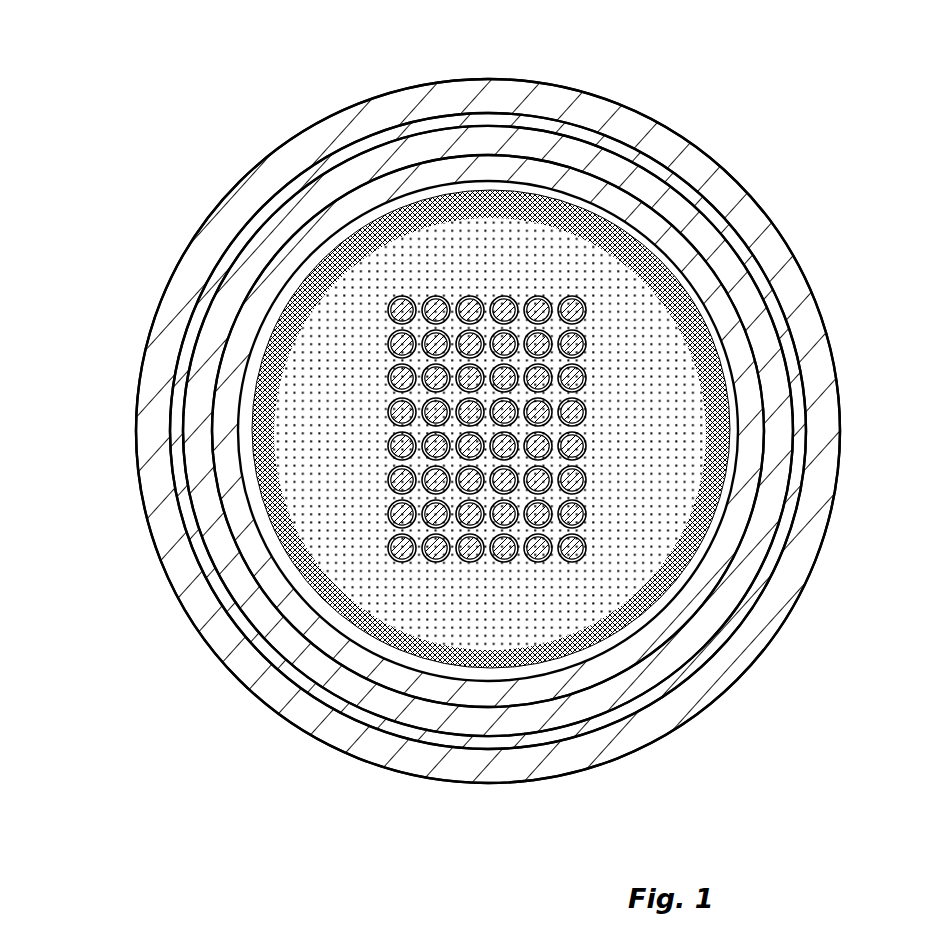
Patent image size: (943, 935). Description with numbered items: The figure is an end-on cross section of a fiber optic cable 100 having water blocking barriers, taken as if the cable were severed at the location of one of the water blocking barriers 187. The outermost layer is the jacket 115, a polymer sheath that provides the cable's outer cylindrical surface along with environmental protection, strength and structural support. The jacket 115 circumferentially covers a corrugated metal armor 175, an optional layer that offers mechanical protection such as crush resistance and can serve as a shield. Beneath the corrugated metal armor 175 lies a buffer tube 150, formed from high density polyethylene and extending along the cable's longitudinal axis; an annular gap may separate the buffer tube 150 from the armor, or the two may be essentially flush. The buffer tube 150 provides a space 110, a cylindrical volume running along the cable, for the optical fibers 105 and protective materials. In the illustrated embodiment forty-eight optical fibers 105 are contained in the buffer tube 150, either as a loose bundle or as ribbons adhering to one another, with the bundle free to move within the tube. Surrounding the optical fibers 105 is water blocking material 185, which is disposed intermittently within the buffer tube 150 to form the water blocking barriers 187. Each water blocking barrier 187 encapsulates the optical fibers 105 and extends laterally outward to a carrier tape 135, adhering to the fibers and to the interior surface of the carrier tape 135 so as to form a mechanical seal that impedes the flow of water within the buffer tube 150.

The fiber optic cable 100 is at (125, 178).
The optical fibers 105 is at (560, 288).
The space 110 is at (650, 117).
The jacket 115 is at (606, 767).
The carrier tape 135 is at (607, 630).
The buffer tube 150 is at (467, 138).
The corrugated metal armor 175 is at (467, 170).
The water blocking material 185 is at (300, 410).
The water blocking barriers 187 is at (290, 472).